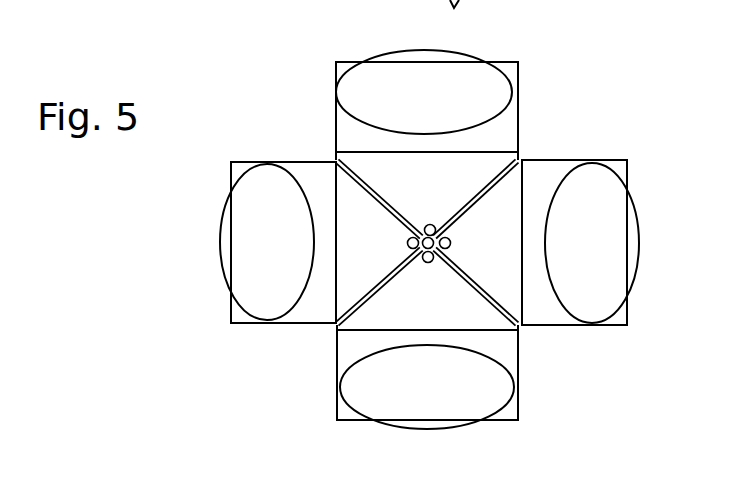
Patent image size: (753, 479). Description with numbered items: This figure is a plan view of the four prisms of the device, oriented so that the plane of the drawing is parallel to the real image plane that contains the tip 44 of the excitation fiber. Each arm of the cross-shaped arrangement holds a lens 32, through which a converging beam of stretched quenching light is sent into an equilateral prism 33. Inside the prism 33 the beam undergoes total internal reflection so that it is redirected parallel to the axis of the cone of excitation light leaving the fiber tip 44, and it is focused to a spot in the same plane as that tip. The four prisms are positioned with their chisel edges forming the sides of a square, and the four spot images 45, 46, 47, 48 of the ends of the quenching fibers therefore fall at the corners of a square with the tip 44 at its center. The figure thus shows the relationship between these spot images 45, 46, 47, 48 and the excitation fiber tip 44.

The lens 32 is at (410, 50).
The equilateral prism 33 is at (518, 133).
The tip of fiber 44 is at (424, 250).
The spot image 45 is at (437, 218).
The spot image 46 is at (451, 243).
The spot image 47 is at (430, 263).
The spot image 48 is at (407, 243).